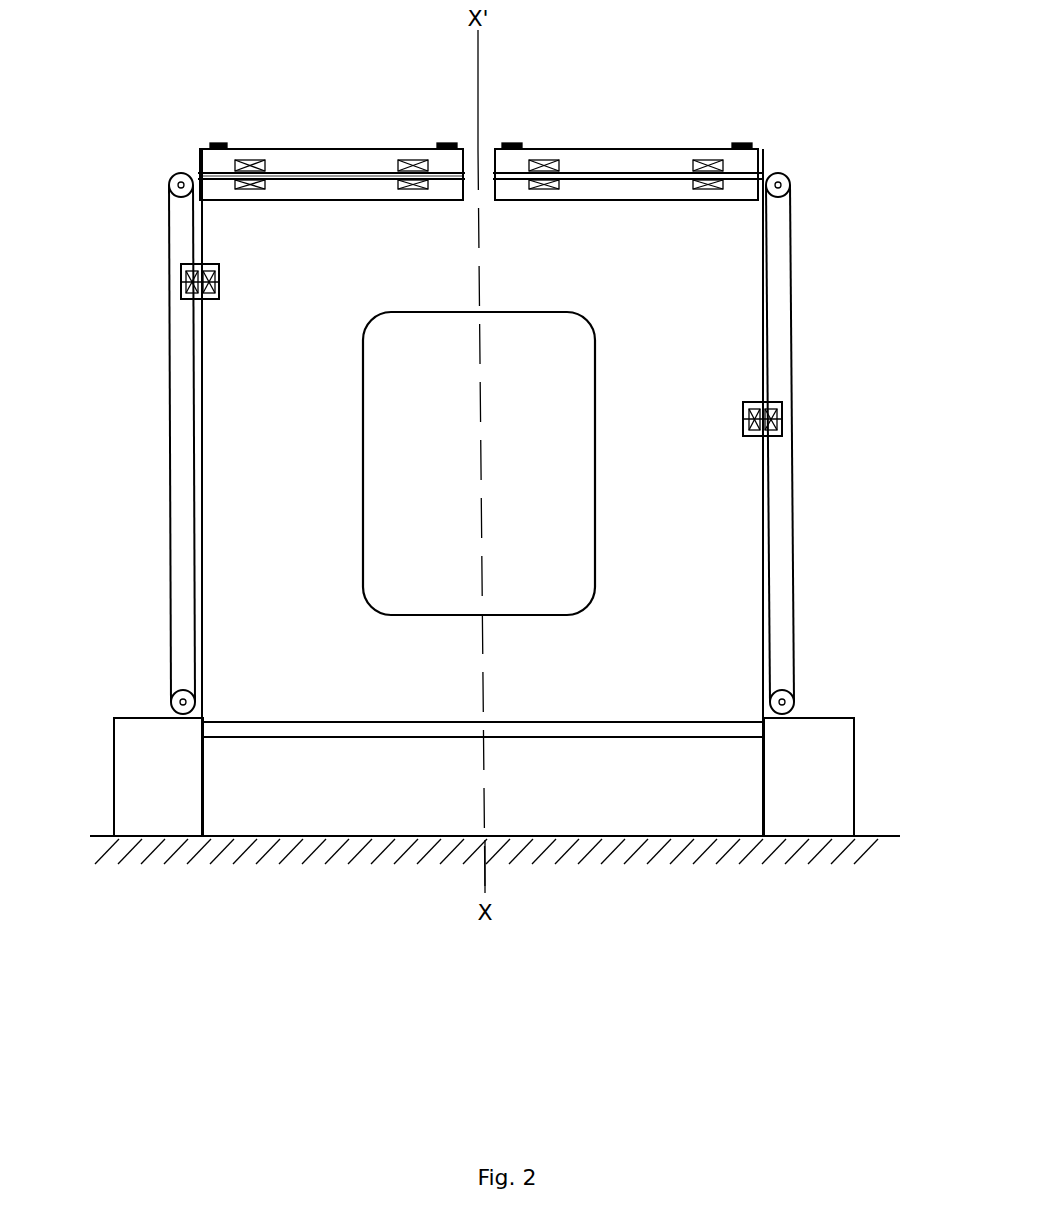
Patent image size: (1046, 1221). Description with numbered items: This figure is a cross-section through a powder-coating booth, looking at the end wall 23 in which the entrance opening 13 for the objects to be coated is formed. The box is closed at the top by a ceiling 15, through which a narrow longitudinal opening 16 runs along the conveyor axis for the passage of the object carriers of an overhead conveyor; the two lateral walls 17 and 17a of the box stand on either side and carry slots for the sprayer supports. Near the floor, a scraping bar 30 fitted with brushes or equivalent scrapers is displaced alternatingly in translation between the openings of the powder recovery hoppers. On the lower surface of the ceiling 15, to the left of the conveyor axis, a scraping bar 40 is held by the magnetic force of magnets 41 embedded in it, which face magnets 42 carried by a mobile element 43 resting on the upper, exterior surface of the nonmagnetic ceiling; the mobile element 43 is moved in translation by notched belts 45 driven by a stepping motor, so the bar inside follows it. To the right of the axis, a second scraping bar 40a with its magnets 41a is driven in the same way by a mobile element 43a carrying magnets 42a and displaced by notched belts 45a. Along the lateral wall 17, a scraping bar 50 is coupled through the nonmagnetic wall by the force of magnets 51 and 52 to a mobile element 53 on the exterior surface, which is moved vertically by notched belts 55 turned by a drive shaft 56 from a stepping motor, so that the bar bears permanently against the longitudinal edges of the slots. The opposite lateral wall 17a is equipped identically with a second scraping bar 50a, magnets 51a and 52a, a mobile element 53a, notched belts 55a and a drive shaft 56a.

The entrance opening 13 is at (479, 463).
The ceiling 15 is at (331, 102).
The narrow longitudinal opening 16 is at (481, 146).
The lateral wall 17 is at (197, 428).
The lateral wall 17a is at (761, 546).
The end wall 23 is at (482, 492).
The scraping bar 30 is at (412, 731).
The scraping bar 40 is at (334, 193).
The second scraping bar 40a is at (621, 193).
The magnets 41 is at (263, 192).
The magnets 41a is at (545, 193).
The magnets 42 is at (250, 149).
The magnets 42a is at (561, 149).
The mobile element 43 is at (313, 150).
The mobile element 43a is at (631, 150).
The notched belts 45 is at (211, 144).
The notched belts 45a is at (513, 143).
The scraping bar 50 is at (222, 273).
The second scraping bar 50a is at (744, 404).
The magnets 51 is at (221, 293).
The magnets 51a is at (744, 432).
The magnets 52 is at (181, 290).
The magnets 52a is at (785, 432).
The mobile element 53 is at (179, 266).
The mobile element 53a is at (793, 400).
The notched belts 55 is at (171, 512).
The notched belts 55a is at (795, 546).
The drive shaft 56 is at (174, 697).
The drive shaft 56a is at (781, 696).